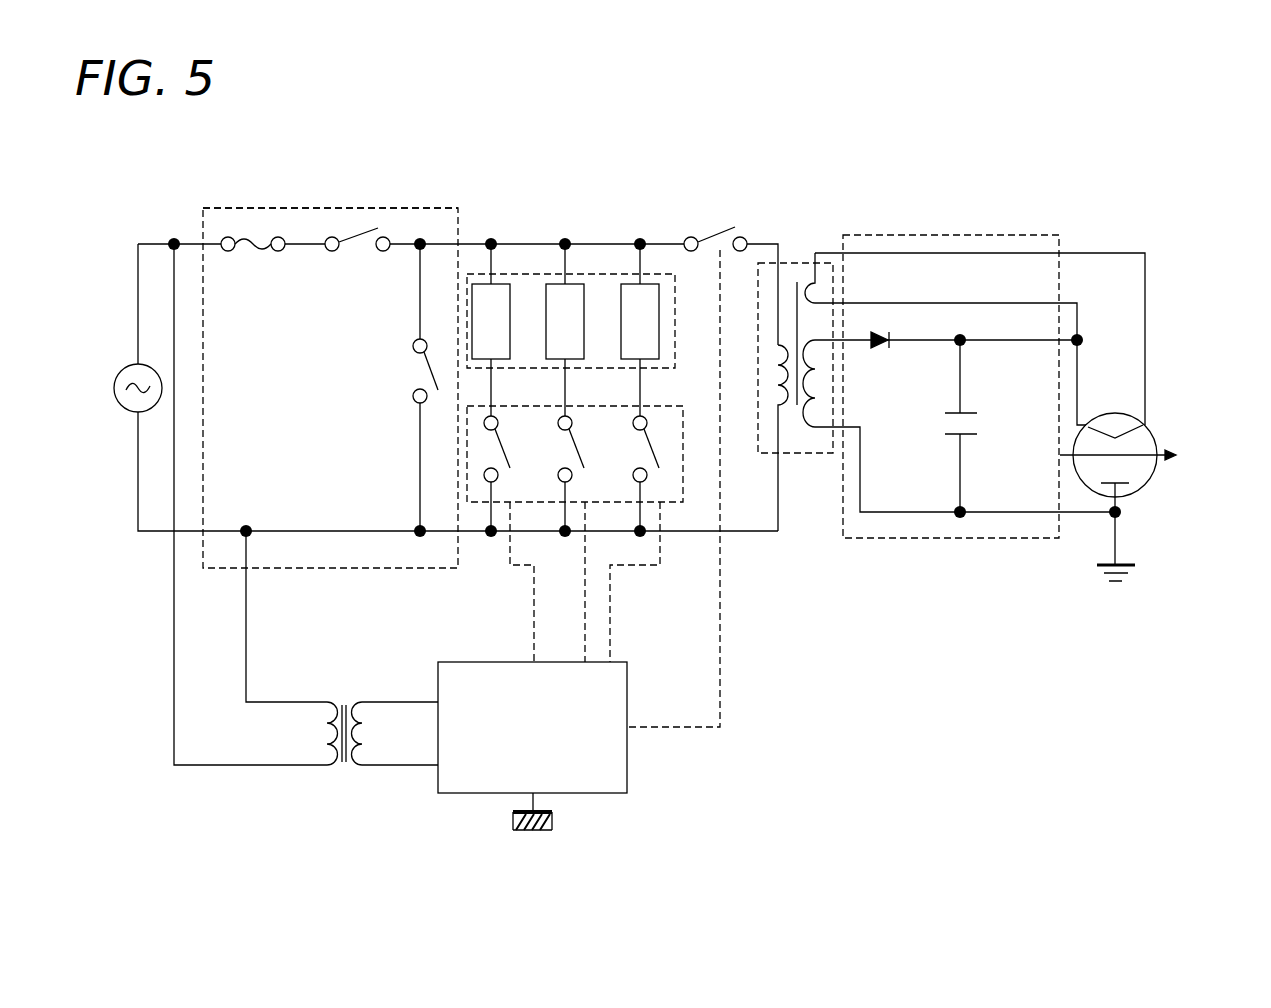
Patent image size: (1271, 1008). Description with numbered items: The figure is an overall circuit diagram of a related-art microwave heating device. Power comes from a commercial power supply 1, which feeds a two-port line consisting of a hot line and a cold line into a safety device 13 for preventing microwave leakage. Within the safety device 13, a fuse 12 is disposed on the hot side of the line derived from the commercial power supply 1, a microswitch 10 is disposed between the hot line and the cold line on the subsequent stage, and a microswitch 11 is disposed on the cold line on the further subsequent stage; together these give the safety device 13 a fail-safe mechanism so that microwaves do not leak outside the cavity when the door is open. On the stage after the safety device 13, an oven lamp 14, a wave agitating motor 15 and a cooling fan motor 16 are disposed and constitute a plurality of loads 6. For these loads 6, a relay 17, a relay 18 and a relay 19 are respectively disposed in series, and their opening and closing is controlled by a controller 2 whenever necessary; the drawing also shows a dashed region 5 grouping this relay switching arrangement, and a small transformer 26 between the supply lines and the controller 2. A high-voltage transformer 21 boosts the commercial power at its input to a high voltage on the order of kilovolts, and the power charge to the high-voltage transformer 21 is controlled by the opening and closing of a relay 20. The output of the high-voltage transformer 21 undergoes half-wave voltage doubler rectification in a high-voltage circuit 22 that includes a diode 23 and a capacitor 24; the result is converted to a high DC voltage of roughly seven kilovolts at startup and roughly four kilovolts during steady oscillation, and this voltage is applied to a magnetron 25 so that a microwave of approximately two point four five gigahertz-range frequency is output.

The commercial power supply 1 is at (120, 353).
The controller 2 is at (580, 753).
The switching unit 5 is at (607, 488).
The loads 6 is at (602, 321).
The microswitch 10 is at (330, 199).
The microswitch 11 is at (367, 387).
The fuse 12 is at (257, 199).
The safety device 13 is at (330, 420).
The oven lamp 14 is at (495, 293).
The wave agitating motor 15 is at (570, 283).
The cooling fan motor 16 is at (645, 283).
The relay 17 is at (513, 437).
The relay 18 is at (582, 437).
The relay 19 is at (658, 437).
The relay 20 is at (724, 199).
The high-voltage transformer 21 is at (936, 361).
The high-voltage circuit 22 is at (951, 434).
The diode 23 is at (880, 358).
The capacitor 24 is at (985, 425).
The magnetron 25 is at (1149, 491).
The transformer 26 is at (342, 786).